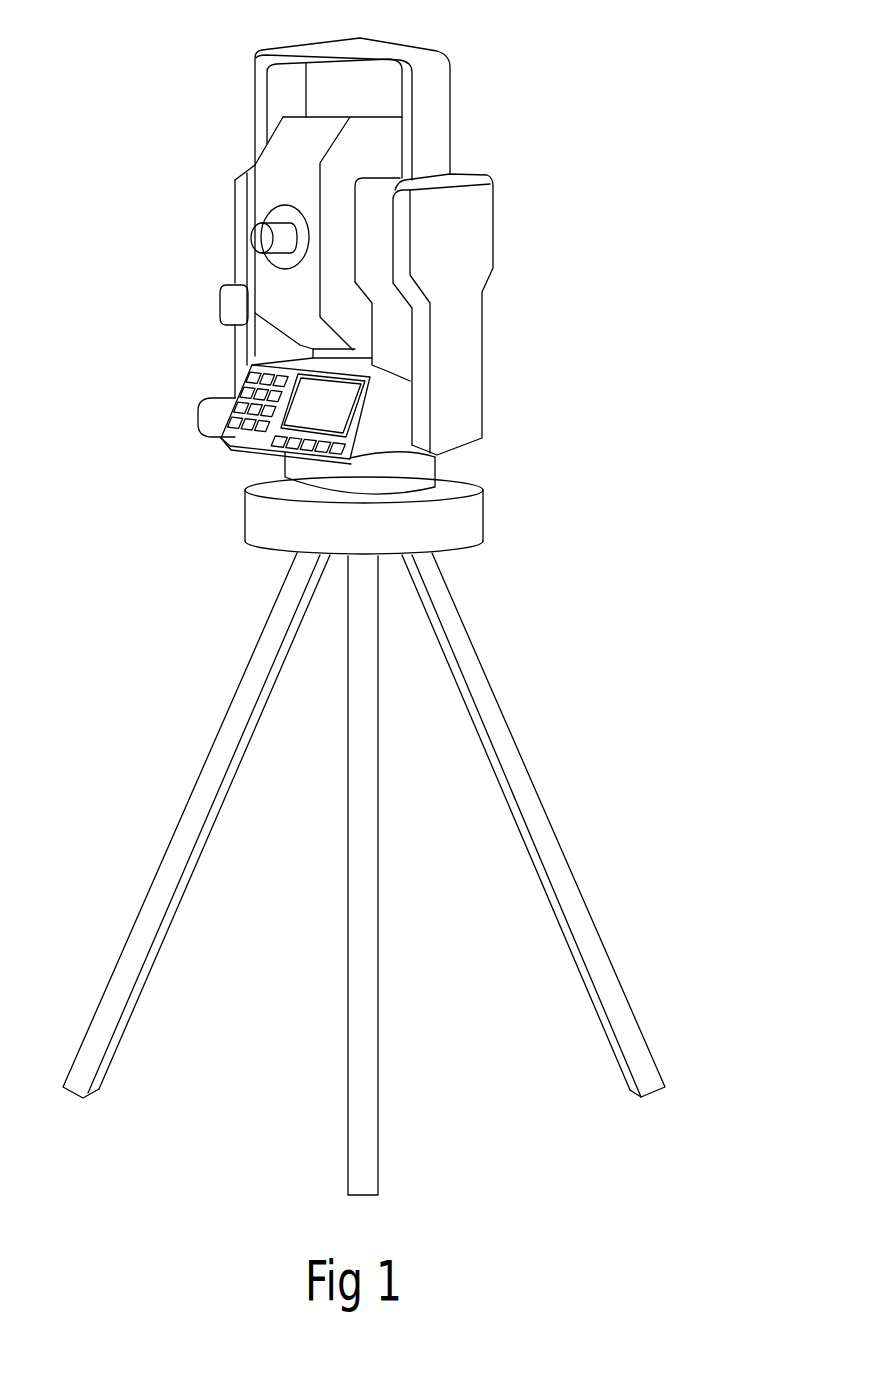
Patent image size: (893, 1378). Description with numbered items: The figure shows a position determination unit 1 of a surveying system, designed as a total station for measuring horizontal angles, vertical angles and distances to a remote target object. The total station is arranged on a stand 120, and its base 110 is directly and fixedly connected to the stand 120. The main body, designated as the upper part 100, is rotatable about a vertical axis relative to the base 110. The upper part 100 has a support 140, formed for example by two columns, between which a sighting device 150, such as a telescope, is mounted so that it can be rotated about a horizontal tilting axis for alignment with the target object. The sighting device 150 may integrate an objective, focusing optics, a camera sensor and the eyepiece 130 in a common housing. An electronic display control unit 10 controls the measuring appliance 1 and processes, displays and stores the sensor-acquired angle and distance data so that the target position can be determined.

The position determination unit 1 is at (532, 585).
The display control unit 10 is at (265, 435).
The upper part 100 is at (643, 33).
The base 110 is at (272, 530).
The stand 120 is at (213, 775).
The eyepiece 130 is at (262, 243).
The support 140 is at (463, 213).
The sighting device 150 is at (313, 130).